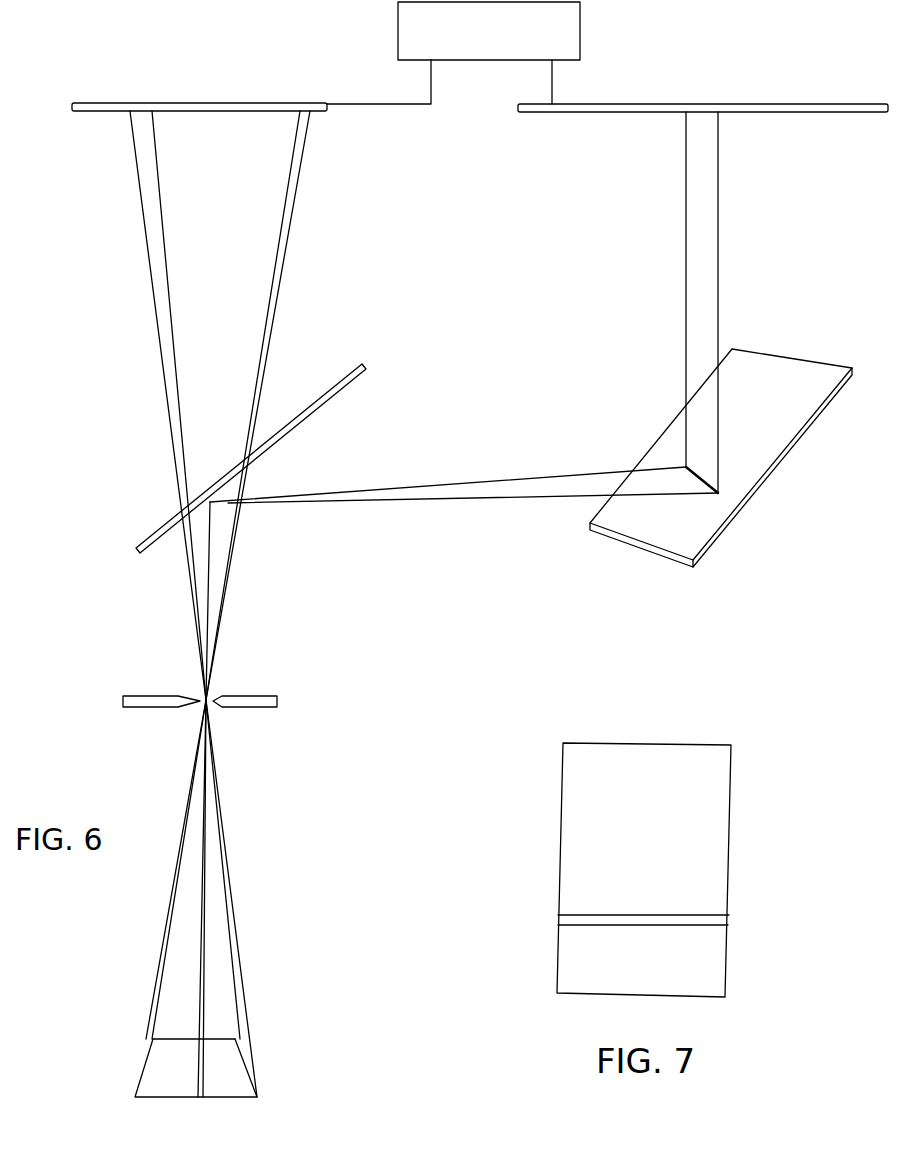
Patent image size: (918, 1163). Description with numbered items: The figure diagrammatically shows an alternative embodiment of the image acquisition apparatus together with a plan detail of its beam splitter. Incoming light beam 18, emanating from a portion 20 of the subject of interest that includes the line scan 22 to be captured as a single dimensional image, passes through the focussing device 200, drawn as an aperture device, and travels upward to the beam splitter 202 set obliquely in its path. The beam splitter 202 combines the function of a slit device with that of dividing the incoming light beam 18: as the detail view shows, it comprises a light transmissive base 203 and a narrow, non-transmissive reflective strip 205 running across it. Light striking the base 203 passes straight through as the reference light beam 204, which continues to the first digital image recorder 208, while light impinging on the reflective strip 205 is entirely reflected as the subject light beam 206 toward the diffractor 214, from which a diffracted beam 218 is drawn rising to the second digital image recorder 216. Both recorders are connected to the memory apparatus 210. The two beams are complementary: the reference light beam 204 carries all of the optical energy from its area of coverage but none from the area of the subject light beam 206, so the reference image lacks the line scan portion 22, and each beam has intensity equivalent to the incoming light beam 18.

In FIG. 6, the incoming light beam 18 is at (255, 578).
In FIG. 6, the portion of the subject of interest 20 is at (178, 1084).
In FIG. 6, the line scan 22 is at (202, 1055).
In FIG. 6, the focussing device 200 is at (264, 732).
In FIG. 6, the beam splitter 202 is at (347, 386).
In FIG. 7, the beam splitter 202 is at (755, 789).
In FIG. 7, the light transmissive base 203 is at (655, 827).
In FIG. 6, the reference light beam 204 is at (312, 220).
In FIG. 7, the reflective strip 205 is at (640, 915).
In FIG. 6, the subject light beam 206 is at (490, 522).
In FIG. 6, the first digital image recorder 208 is at (208, 103).
In FIG. 6, the memory apparatus 210 is at (581, 24).
In FIG. 6, the diffractor 214 is at (723, 532).
In FIG. 6, the second digital image recorder 216 is at (771, 104).
In FIG. 6, the light beam 218 is at (672, 228).